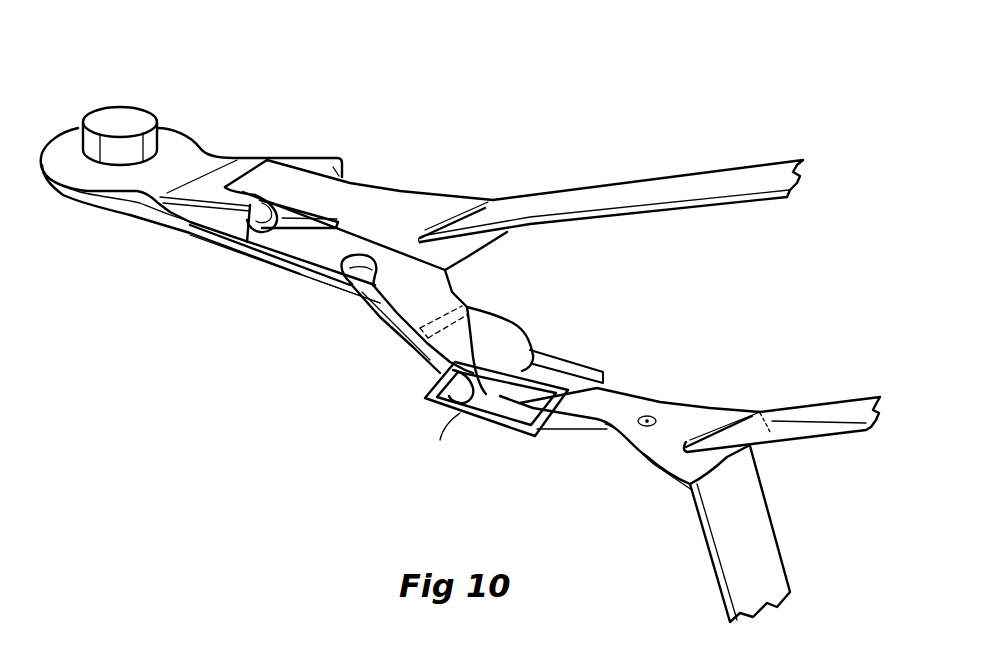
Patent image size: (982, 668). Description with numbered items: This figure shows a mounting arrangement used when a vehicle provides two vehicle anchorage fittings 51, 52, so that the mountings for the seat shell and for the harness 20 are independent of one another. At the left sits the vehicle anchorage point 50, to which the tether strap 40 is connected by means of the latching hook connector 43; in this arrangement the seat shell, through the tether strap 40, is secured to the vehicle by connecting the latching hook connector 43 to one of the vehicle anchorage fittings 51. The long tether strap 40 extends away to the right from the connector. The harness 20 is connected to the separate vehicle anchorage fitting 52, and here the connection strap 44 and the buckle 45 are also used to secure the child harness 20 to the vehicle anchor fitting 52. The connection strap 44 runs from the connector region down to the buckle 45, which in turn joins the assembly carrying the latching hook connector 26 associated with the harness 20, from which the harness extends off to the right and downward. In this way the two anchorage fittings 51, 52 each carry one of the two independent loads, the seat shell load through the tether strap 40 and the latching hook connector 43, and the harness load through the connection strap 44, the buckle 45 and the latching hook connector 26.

The harness 20 is at (817, 413).
The latching hook connector 26 is at (673, 417).
The tether strap 40 is at (623, 193).
The latching hook connector 43 is at (405, 207).
The connection strap 44 is at (408, 297).
The buckle 45 is at (452, 413).
The vehicle anchorage point 50 is at (170, 140).
The vehicle anchorage fitting 51 is at (292, 160).
The vehicle anchorage fitting 52 is at (302, 256).